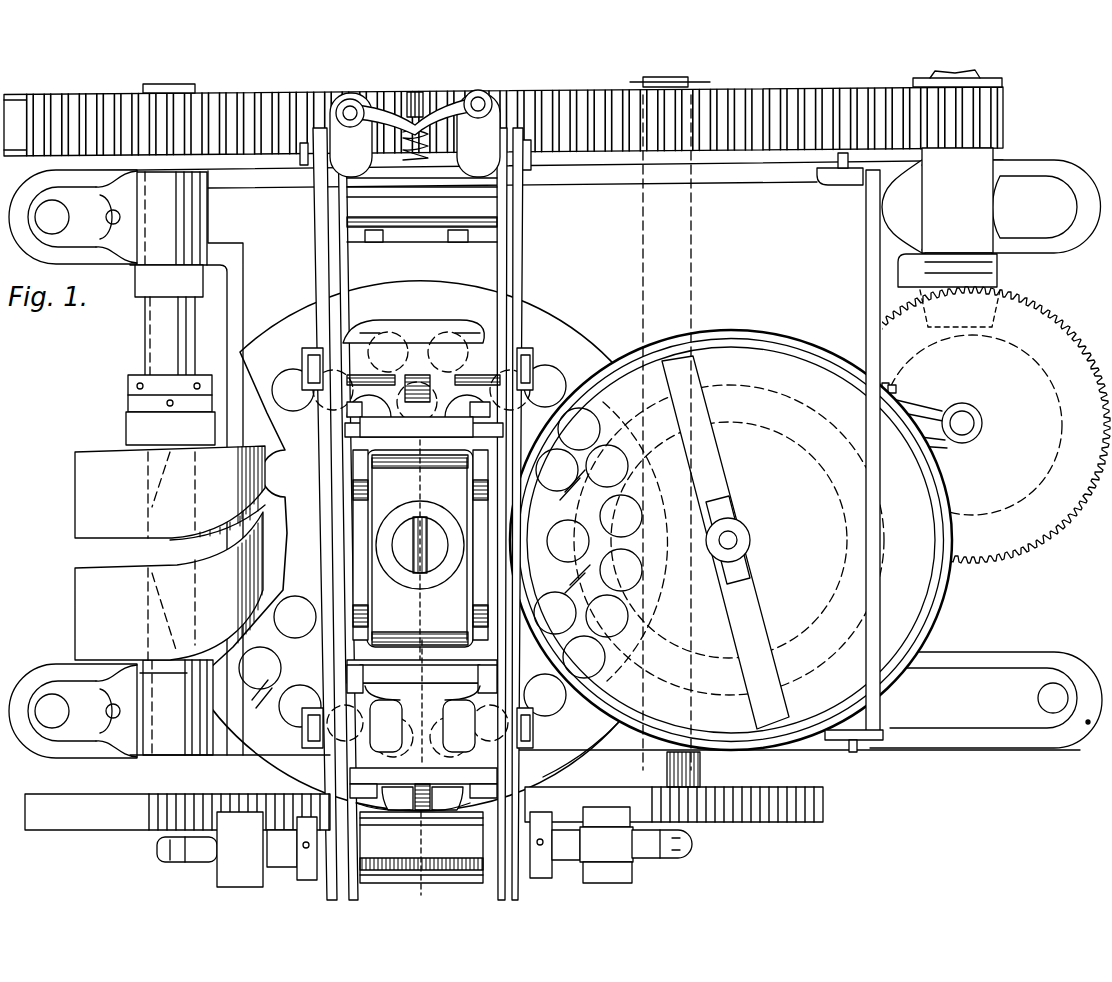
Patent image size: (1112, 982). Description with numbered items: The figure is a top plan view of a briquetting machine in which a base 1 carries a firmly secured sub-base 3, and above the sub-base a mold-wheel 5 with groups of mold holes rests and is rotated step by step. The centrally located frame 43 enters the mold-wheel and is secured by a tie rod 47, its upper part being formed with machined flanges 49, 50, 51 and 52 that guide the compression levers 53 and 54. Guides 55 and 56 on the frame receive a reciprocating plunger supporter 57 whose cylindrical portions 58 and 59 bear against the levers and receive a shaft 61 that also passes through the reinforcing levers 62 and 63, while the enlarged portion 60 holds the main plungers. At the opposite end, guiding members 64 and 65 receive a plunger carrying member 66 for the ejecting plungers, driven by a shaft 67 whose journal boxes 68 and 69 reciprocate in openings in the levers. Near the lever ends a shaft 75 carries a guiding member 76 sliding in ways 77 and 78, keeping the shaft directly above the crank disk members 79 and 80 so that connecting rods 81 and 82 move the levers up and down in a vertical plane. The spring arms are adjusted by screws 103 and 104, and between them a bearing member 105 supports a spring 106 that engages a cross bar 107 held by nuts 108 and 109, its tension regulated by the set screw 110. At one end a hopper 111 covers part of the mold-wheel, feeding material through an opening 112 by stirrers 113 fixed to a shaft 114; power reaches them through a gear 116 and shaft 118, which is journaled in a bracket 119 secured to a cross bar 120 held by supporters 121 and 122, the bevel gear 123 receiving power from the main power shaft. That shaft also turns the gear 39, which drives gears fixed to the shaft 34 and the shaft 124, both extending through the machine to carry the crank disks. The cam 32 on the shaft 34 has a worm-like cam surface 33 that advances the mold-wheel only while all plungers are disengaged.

The base 1 is at (1006, 750).
The sub-base 3 is at (419, 899).
The mold-wheel 5 is at (568, 766).
The cam 32 is at (75, 481).
The cam surface 33 is at (77, 548).
The shaft 34 is at (205, 90).
The gear 39 is at (1003, 136).
The frame 43 is at (420, 548).
The tie rod 47 is at (426, 518).
The flange 49 is at (480, 447).
The flange 50 is at (490, 661).
The flange 51 is at (345, 661).
The flange 52 is at (358, 462).
The compression lever 53 is at (494, 276).
The compression lever 54 is at (333, 262).
The guide 55 is at (503, 420).
The guide 56 is at (345, 425).
The plunger supporter 57 is at (432, 333).
The cylindrical portion 58 is at (478, 355).
The cylindrical portion 59 is at (380, 333).
The enlarged portion 60 is at (400, 320).
The shaft 61 is at (534, 360).
The reinforcing lever 62 is at (508, 216).
The reinforcing lever 63 is at (312, 203).
The guiding member 64 is at (497, 682).
The guiding member 65 is at (347, 682).
The plunger carrying member 66 is at (417, 702).
The shaft 67 is at (303, 738).
The journal box 68 is at (520, 768).
The journal box 69 is at (320, 742).
The shaft 75 is at (576, 872).
The guiding member 76 is at (366, 774).
The way 77 is at (500, 773).
The way 78 is at (421, 853).
The disk member 79 is at (138, 832).
The disk member 80 is at (674, 801).
The connecting rod 81 is at (217, 870).
The connecting rod 82 is at (620, 872).
The screw 103 is at (366, 113).
The screw 104 is at (484, 85).
The bearing member 105 is at (455, 160).
The spring 106 is at (404, 160).
The cross bar 107 is at (417, 115).
The nut 108 is at (351, 135).
The nut 109 is at (478, 135).
The set screw 110 is at (414, 92).
The hopper 111 is at (795, 740).
The opening 112 is at (620, 660).
The stirrer 113 is at (812, 646).
The shaft 114 is at (740, 542).
The gear 116 is at (995, 560).
The shaft 118 is at (968, 432).
The bracket 119 is at (935, 445).
The cross bar 120 is at (866, 286).
The supporter 121 is at (833, 180).
The supporter 122 is at (870, 732).
The gear 123 is at (1000, 294).
The shaft 124 is at (690, 80).